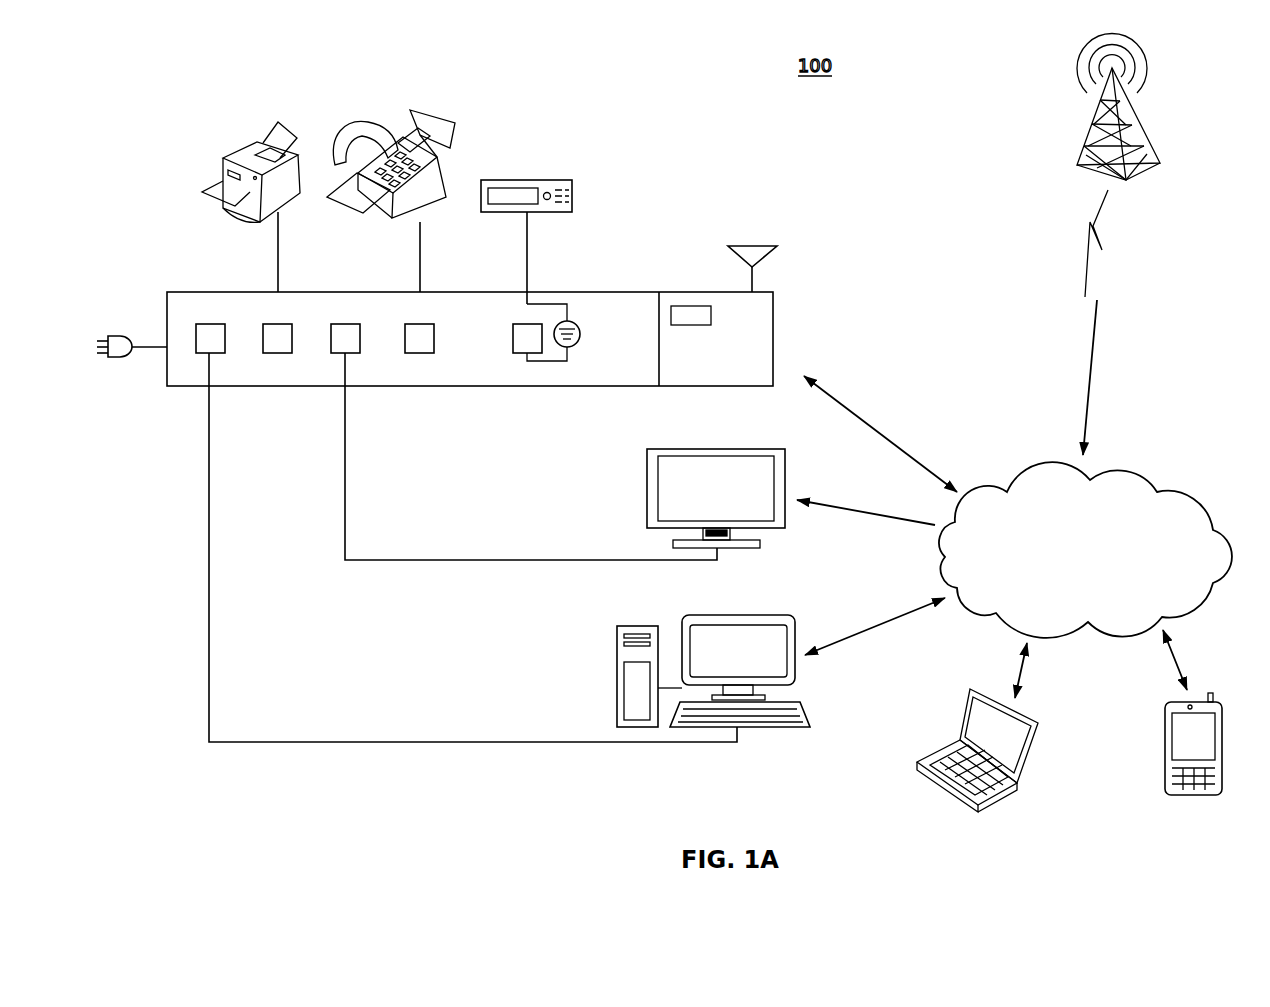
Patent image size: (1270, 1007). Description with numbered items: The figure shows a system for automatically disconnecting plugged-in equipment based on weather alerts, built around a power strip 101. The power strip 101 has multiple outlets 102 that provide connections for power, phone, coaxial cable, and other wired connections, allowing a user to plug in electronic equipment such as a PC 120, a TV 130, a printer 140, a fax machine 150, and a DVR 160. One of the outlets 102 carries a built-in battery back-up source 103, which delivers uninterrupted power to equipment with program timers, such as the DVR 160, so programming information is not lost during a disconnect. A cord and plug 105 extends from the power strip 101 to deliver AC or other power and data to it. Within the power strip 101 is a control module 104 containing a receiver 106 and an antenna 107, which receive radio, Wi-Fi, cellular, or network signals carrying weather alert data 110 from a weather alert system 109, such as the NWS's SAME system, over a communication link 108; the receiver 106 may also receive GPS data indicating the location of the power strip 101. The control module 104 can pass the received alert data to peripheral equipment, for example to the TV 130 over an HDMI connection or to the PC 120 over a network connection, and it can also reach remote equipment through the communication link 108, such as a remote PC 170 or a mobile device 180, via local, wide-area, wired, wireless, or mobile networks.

The power strip 101 is at (607, 290).
The outlets 102 is at (206, 323).
The built-in battery back-up source 103 is at (582, 336).
The control module 104 is at (775, 337).
The cord and plug 105 is at (127, 336).
The receiver 106 is at (686, 305).
The antenna 107 is at (767, 246).
The communication link 108 is at (1188, 492).
The weather alert system 109 is at (1140, 113).
The weather alert data 110 is at (1107, 233).
The PC 120 is at (742, 613).
The TV 130 is at (742, 448).
The printer 140 is at (237, 146).
The fax machine 150 is at (395, 125).
The DVR 160 is at (558, 178).
The remote PC 170 is at (965, 712).
The mobile device 180 is at (1167, 720).